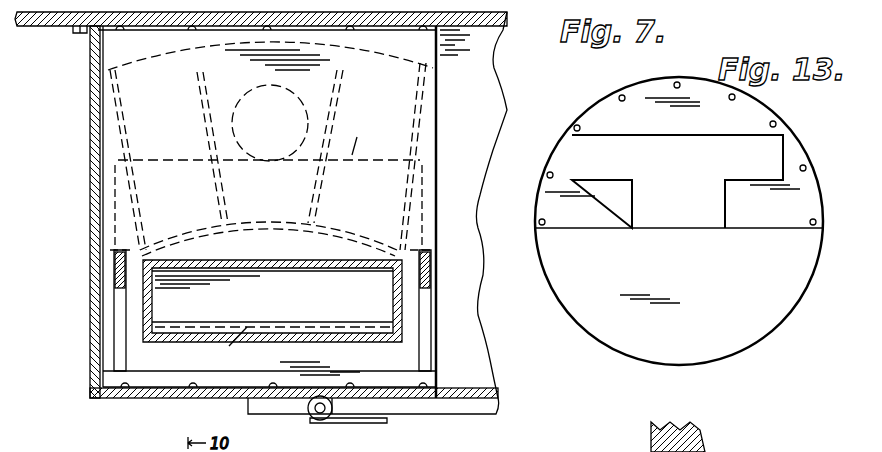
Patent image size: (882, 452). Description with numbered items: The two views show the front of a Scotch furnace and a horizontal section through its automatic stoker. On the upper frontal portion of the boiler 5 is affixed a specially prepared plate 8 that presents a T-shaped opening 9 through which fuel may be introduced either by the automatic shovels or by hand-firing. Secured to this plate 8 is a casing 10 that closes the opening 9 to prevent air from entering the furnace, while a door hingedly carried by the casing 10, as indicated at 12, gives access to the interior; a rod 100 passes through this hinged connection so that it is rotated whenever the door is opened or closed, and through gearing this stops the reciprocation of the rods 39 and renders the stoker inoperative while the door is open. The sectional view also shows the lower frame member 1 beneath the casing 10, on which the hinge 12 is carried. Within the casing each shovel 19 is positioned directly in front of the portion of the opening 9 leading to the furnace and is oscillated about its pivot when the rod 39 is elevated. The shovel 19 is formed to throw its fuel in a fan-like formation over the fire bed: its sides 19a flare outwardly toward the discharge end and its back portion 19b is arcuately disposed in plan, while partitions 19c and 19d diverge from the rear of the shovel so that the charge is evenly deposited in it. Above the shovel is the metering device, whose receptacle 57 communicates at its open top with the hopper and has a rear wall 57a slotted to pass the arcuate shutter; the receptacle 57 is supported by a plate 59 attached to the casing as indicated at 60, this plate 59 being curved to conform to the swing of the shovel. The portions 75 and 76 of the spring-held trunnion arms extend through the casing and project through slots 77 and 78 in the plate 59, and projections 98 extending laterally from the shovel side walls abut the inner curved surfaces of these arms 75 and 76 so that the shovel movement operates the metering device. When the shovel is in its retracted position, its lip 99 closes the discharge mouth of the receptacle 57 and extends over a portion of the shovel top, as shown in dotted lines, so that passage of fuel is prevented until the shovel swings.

In FIG. 7, the base frame 1 is at (482, 406).
In FIG. 13, the boiler 5 is at (765, 322).
In FIG. 7, the plate 8 is at (52, 26).
In FIG. 13, the plate 8 is at (798, 152).
In FIG. 13, the T-shaped opening 9 is at (685, 137).
In FIG. 7, the casing 10 is at (92, 133).
In FIG. 7, the hinge 12 is at (318, 420).
In FIG. 7, the shovel 19 is at (420, 139).
In FIG. 7, the sides 19a is at (122, 104).
In FIG. 7, the back portion 19b is at (280, 226).
In FIG. 7, the partition 19c is at (222, 203).
In FIG. 7, the partition 19d is at (326, 192).
In FIG. 7, the rod 39 is at (276, 88).
In FIG. 13, the rod 39 is at (651, 440).
In FIG. 7, the receptacle 57 is at (320, 270).
In FIG. 7, the rear wall 57a is at (203, 322).
In FIG. 7, the plate 59 is at (438, 190).
In FIG. 7, the attachment 60 is at (300, 378).
In FIG. 7, the arm portion 75 is at (432, 262).
In FIG. 7, the arm portion 76 is at (114, 266).
In FIG. 7, the slot 77 is at (432, 338).
In FIG. 7, the slot 78 is at (118, 322).
In FIG. 7, the projections 98 is at (130, 250).
In FIG. 7, the lip 99 is at (291, 246).
In FIG. 7, the rod 100 is at (306, 410).